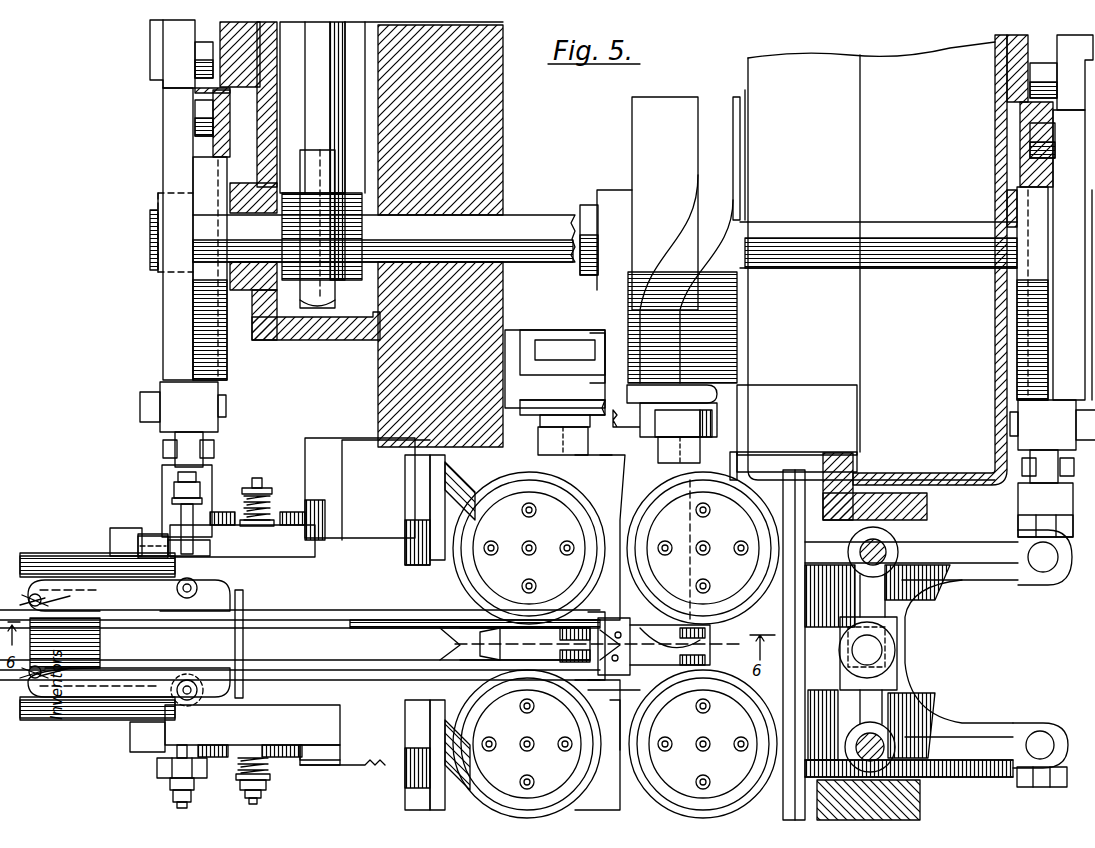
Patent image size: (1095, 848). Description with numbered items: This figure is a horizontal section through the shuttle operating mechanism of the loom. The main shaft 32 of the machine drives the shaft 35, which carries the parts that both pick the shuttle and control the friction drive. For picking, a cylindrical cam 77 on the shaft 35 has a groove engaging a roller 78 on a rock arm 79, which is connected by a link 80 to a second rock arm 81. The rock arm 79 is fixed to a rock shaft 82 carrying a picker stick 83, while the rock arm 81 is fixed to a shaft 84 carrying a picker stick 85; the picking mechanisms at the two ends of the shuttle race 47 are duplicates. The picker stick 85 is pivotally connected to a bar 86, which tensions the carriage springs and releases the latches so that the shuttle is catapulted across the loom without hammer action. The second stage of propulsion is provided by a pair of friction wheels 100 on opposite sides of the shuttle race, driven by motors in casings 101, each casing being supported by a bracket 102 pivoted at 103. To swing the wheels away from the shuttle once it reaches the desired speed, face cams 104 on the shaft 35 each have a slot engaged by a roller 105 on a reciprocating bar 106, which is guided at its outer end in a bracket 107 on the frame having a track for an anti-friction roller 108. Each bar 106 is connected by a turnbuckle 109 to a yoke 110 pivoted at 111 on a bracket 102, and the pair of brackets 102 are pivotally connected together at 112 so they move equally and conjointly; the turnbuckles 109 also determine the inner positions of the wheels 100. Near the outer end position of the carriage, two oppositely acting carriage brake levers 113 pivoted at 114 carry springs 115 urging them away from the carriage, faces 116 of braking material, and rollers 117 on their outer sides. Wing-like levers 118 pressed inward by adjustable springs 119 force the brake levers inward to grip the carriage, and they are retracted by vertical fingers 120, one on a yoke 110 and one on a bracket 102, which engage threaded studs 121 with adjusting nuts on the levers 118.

The main shaft 32 is at (336, 92).
The shaft 35 is at (514, 224).
The shuttle race 47 is at (306, 530).
The cylindrical cam 77 is at (640, 121).
The roller 78 is at (632, 338).
The rock arm 79 is at (680, 395).
The link 80 is at (593, 414).
The rock arm 81 is at (533, 390).
The rock shaft 82 is at (702, 448).
The picker stick 83 is at (708, 645).
The shaft 84 is at (590, 448).
The picker stick 85 is at (598, 610).
The bar 86 is at (628, 682).
The friction wheels 100 is at (572, 505).
The casings 101 is at (486, 480).
The bracket 102 is at (410, 522).
The pivot 103 is at (880, 566).
The face cams 104 is at (228, 362).
The roller 105 is at (196, 132).
The reciprocating bar 106 is at (165, 316).
The bracket 107 is at (152, 39).
The anti-friction roller 108 is at (196, 78).
The turnbuckle 109 is at (162, 448).
The yoke 110 is at (162, 474).
The pivot 111 is at (1045, 573).
The pivotal connection 112 is at (875, 650).
The carriage brake levers 113 is at (108, 590).
The pivot 114 is at (34, 593).
The springs 115 is at (52, 594).
The faces of braking material 116 is at (197, 596).
The rollers 117 is at (150, 578).
The wing-like levers 118 is at (218, 528).
The adjustable springs 119 is at (268, 518).
The vertical fingers 120 is at (205, 512).
The threaded studs 121 is at (180, 506).